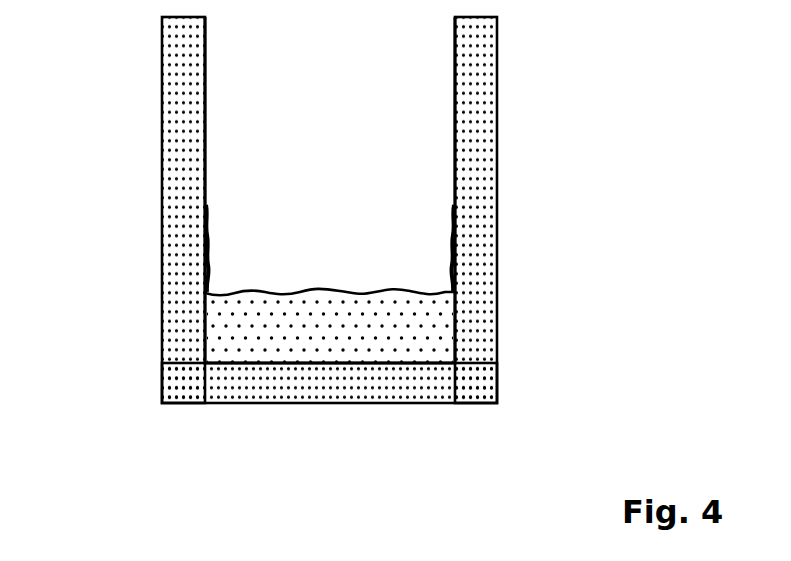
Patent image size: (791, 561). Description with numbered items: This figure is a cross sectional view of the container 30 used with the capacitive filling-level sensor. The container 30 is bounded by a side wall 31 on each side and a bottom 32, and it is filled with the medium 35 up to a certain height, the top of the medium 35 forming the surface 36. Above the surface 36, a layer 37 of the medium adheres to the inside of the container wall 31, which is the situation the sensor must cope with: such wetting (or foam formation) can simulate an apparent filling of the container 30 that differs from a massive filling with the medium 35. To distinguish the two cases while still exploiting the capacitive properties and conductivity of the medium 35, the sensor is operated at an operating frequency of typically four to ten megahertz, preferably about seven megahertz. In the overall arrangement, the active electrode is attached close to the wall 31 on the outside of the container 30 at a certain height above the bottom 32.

The container 30 is at (345, 97).
The container wall 31 is at (179, 65).
The bottom 32 is at (302, 382).
The medium 35 is at (348, 338).
The surface 36 is at (280, 288).
The layer of the medium 37 is at (210, 248).